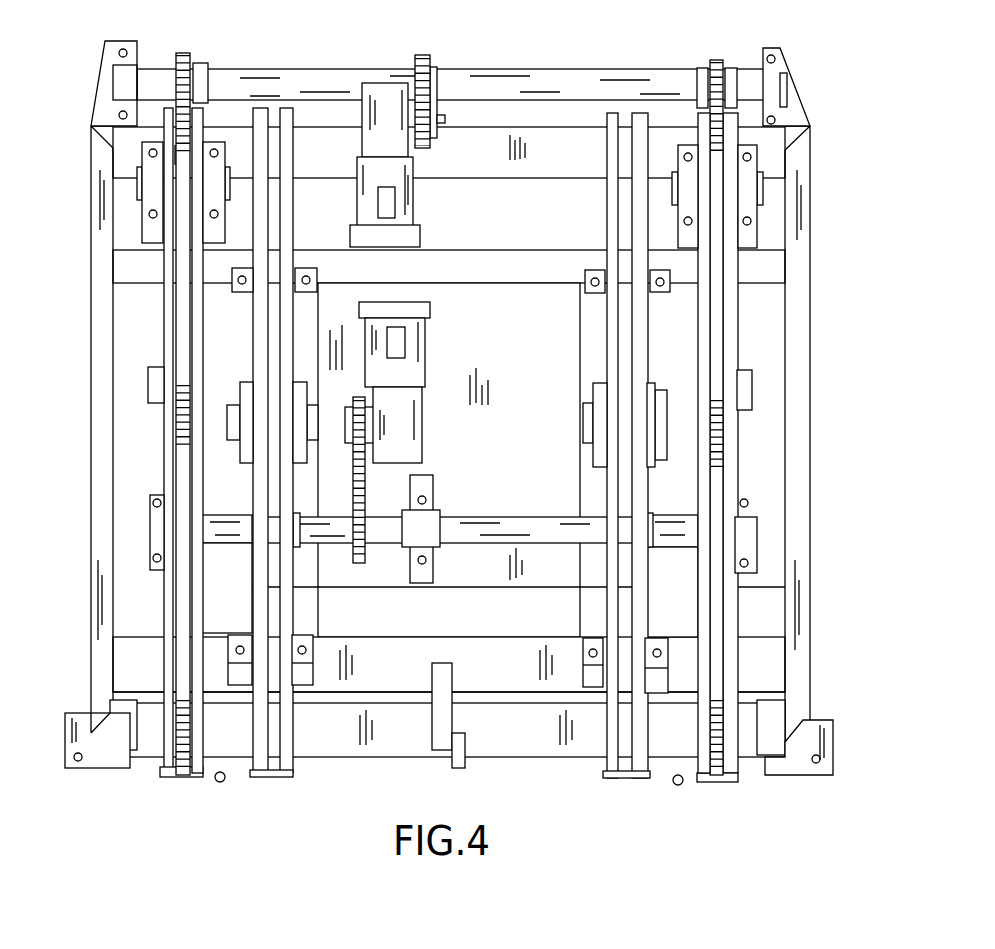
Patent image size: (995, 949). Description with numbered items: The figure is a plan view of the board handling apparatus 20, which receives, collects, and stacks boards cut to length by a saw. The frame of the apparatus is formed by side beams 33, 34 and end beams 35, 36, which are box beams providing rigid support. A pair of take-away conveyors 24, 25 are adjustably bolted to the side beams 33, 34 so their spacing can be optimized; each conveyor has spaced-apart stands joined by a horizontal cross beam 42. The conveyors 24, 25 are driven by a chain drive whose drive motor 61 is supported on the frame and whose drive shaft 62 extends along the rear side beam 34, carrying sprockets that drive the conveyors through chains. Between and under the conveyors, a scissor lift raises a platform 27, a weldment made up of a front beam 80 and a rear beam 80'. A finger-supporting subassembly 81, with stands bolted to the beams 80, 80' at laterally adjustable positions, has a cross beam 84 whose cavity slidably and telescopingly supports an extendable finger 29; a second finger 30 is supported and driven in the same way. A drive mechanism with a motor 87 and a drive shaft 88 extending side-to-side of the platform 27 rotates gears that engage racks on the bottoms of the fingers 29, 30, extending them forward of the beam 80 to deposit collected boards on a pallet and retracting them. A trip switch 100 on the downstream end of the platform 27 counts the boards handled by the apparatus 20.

The board handling apparatus 20 is at (818, 95).
The take-away conveyor 24 is at (185, 305).
The take-away conveyor 25 is at (720, 430).
The platform 27 is at (542, 399).
The finger 29 is at (270, 775).
The finger 30 is at (632, 778).
The side beam 33 is at (530, 757).
The side beam 34 is at (555, 166).
The end beam 35 is at (91, 430).
The end beam 36 is at (810, 297).
The cross beam 42 is at (160, 450).
The drive motor 61 is at (412, 195).
The drive shaft 62 is at (505, 70).
The front beam 80 is at (449, 691).
The rear beam 80' is at (449, 252).
The finger-supporting subassembly 81 is at (268, 127).
The cross beam 84 is at (245, 322).
The motor 87 is at (425, 352).
The drive shaft 88 is at (496, 517).
The trip switch 100 is at (455, 767).